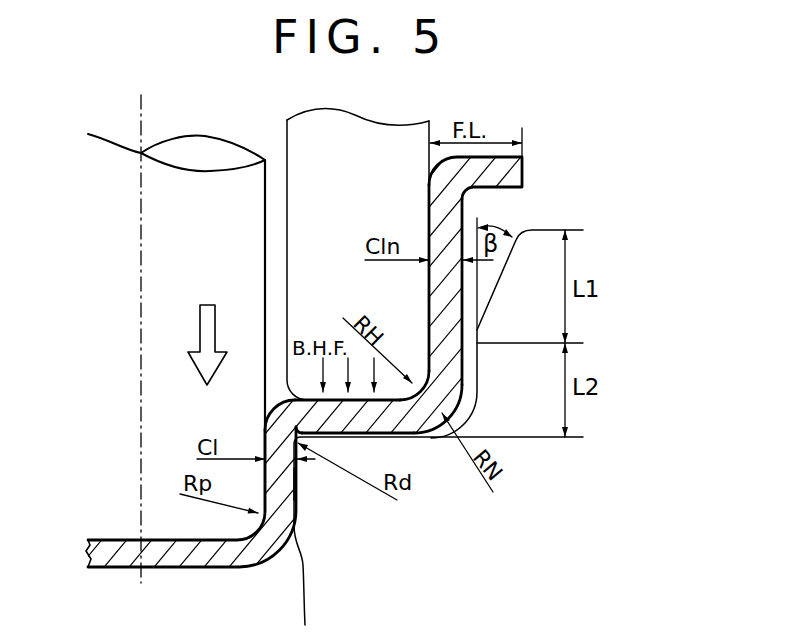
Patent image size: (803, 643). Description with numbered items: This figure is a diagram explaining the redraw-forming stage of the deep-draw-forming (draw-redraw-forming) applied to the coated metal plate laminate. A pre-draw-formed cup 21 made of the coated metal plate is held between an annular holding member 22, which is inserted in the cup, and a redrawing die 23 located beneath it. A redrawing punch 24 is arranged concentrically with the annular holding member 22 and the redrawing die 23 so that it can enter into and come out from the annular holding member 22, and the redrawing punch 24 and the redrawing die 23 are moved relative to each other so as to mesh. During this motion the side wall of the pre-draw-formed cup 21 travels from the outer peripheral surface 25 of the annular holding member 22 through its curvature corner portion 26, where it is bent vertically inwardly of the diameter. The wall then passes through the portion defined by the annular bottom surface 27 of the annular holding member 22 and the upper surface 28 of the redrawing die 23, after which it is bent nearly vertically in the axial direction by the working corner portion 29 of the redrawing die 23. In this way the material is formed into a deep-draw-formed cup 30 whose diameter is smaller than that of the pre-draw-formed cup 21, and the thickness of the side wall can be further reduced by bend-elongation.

The pre-draw-formed cup 21 is at (455, 225).
The annular holding member 22 is at (366, 215).
The redrawing die 23 is at (440, 565).
The redrawing punch 24 is at (191, 270).
The outer peripheral surface 25 is at (430, 158).
The curvature corner portion 26 is at (416, 377).
The annular bottom surface 27 is at (290, 386).
The upper surface 28 is at (416, 437).
The working corner portion 29 is at (306, 440).
The deep-draw-formed cup 30 is at (297, 478).